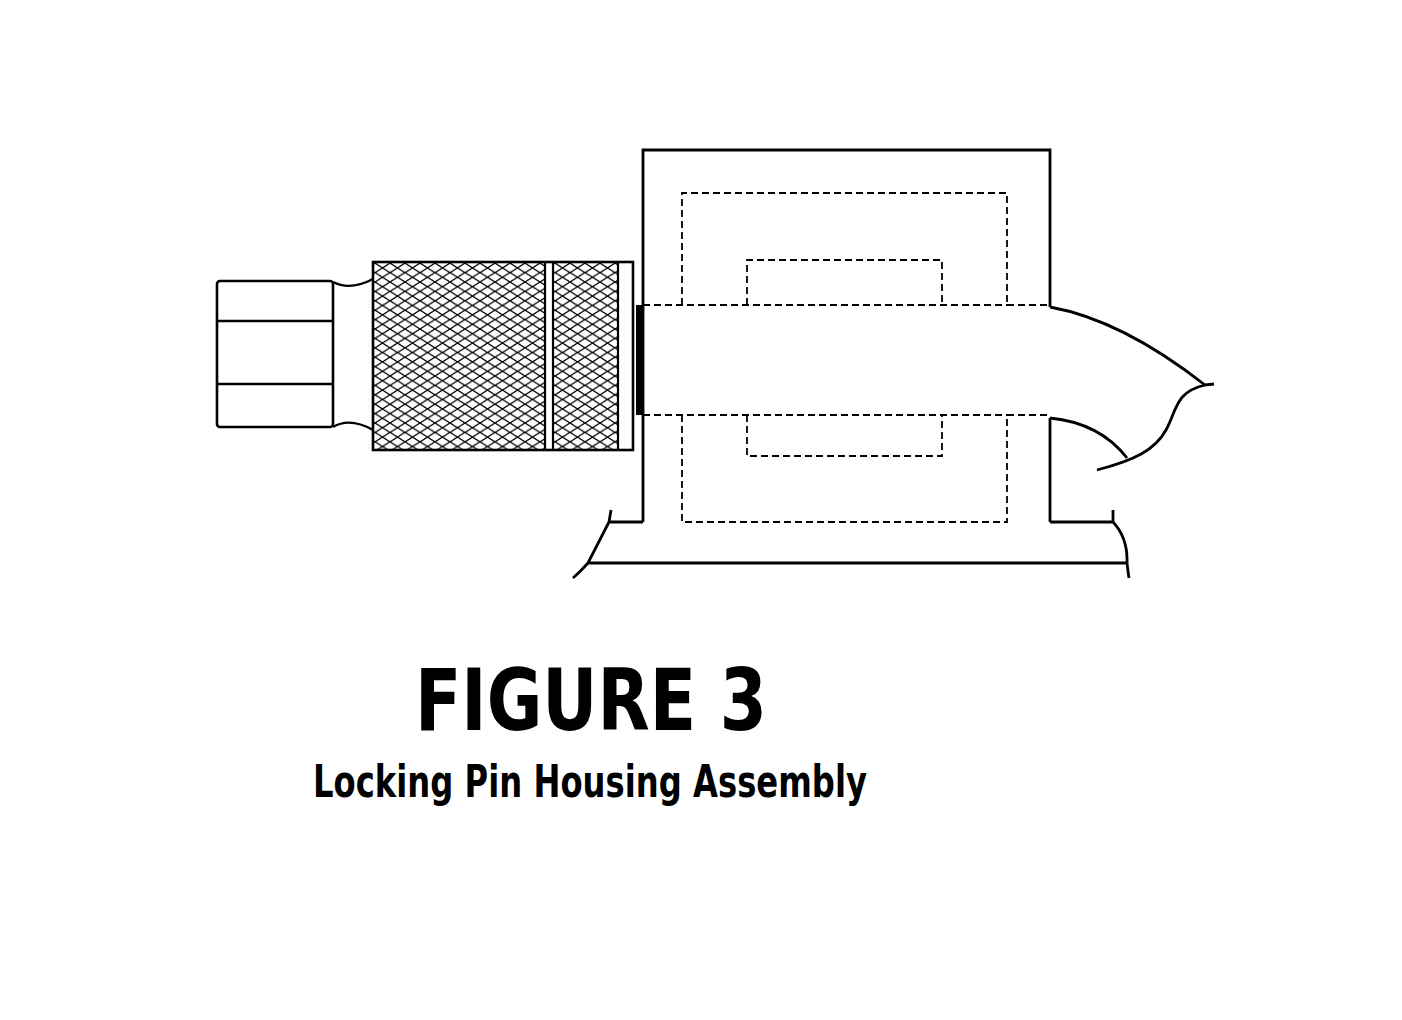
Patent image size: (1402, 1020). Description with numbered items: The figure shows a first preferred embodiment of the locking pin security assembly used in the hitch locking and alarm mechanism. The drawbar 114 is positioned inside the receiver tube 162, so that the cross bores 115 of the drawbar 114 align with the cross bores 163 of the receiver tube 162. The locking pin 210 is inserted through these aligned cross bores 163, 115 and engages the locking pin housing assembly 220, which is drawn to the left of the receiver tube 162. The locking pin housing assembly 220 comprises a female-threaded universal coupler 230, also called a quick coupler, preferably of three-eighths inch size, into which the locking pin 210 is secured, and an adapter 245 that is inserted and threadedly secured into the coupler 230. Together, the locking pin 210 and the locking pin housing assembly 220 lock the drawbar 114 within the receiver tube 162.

The locking pin housing assembly 220 is at (445, 228).
The adapter 245 is at (338, 432).
The coupler 230 is at (597, 240).
The receiver tube 162 is at (803, 172).
The drawbar 114 is at (875, 227).
The cross bores 115 is at (967, 305).
The cross bores 163 is at (1018, 305).
The locking pin 210 is at (1072, 345).